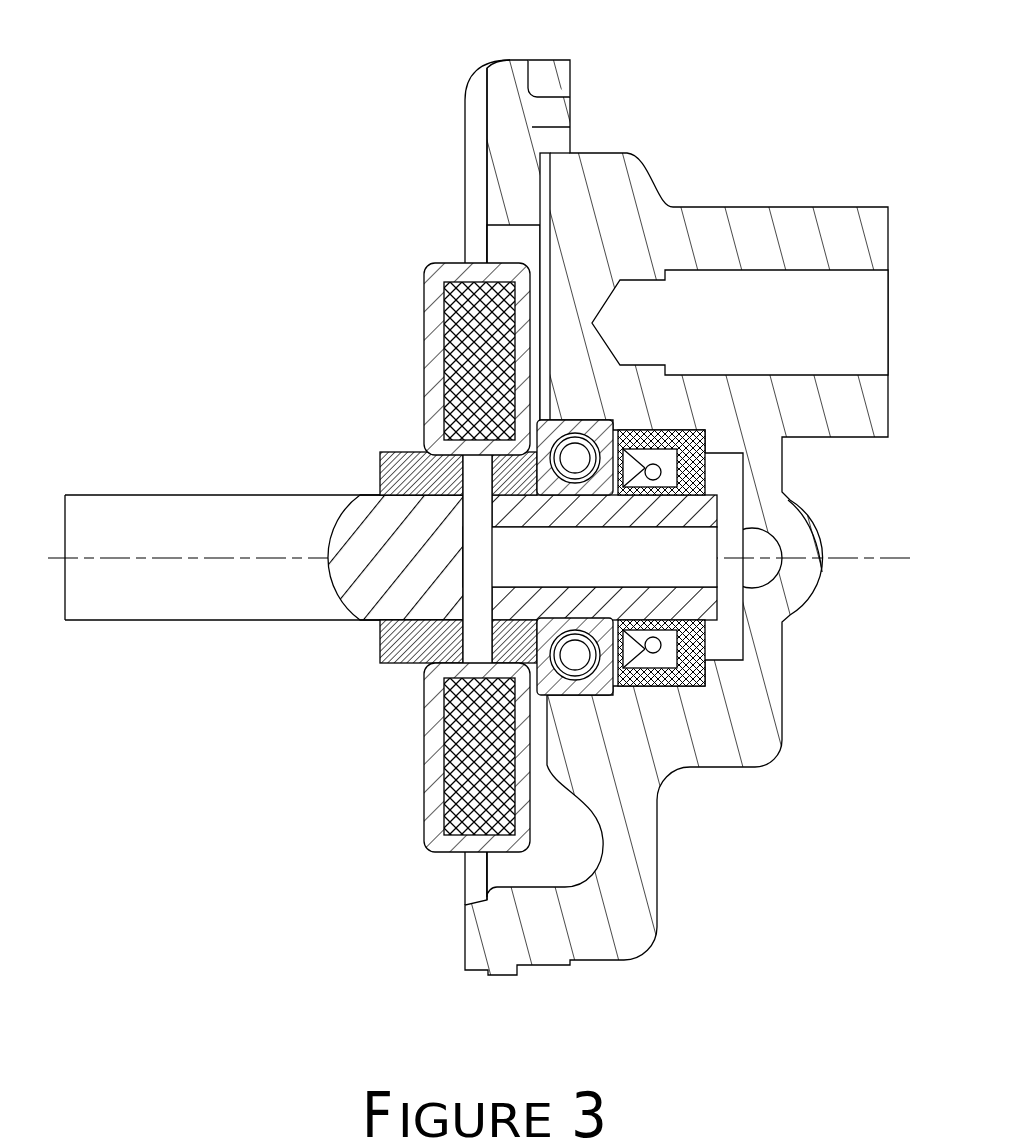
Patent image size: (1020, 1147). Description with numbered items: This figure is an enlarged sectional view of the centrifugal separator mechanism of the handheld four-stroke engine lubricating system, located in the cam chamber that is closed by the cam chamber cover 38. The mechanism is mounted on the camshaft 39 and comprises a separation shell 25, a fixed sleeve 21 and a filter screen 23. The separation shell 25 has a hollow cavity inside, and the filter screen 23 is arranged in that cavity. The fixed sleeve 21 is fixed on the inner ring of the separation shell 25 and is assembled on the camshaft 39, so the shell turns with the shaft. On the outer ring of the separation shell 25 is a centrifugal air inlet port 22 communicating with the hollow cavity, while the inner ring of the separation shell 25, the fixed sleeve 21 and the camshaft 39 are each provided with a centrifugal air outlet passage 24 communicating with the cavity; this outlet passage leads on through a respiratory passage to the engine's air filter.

The fixed sleeve 21 is at (420, 473).
The centrifugal air inlet port 22 is at (478, 272).
The filter screen 23 is at (442, 332).
The centrifugal air outlet passage 24 is at (635, 547).
The separation shell 25 is at (425, 265).
The cam chamber cover 38 is at (612, 222).
The camshaft 39 is at (373, 513).